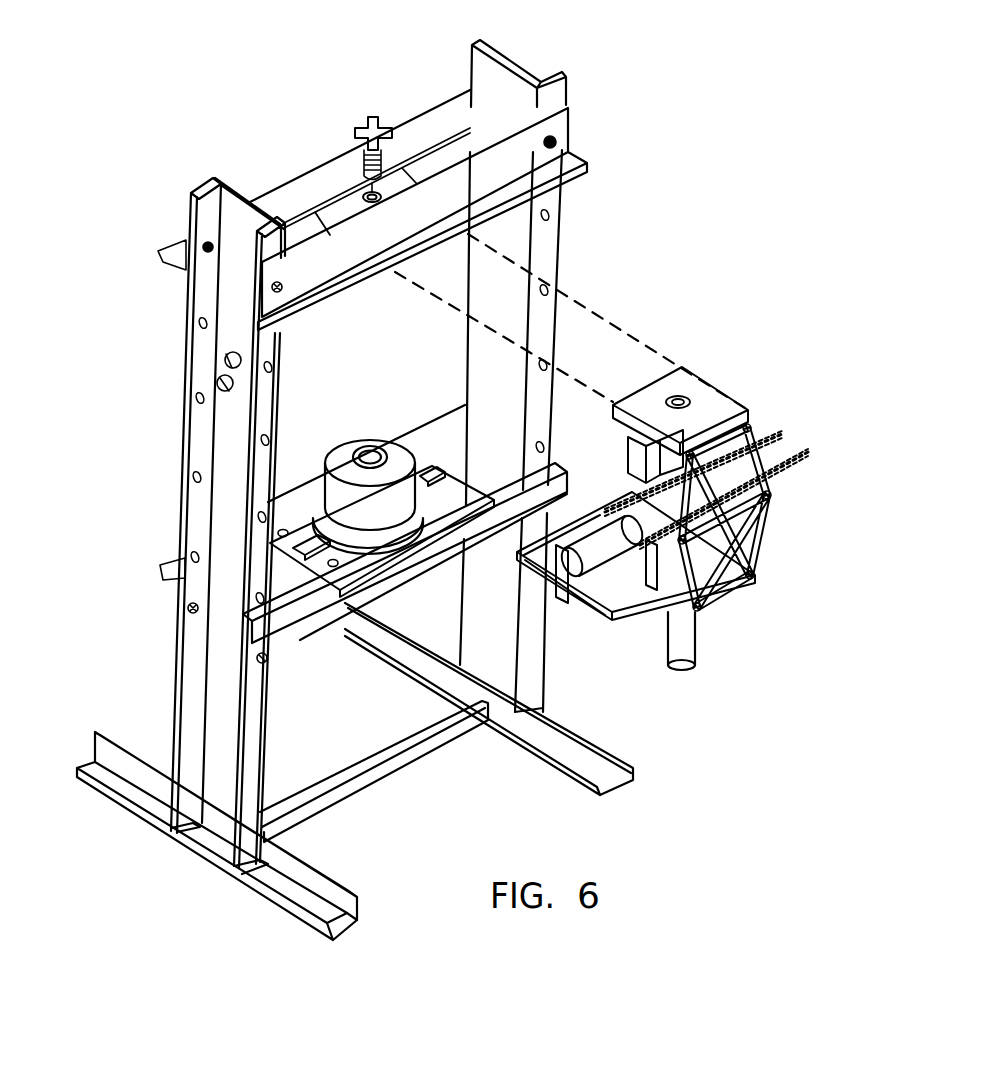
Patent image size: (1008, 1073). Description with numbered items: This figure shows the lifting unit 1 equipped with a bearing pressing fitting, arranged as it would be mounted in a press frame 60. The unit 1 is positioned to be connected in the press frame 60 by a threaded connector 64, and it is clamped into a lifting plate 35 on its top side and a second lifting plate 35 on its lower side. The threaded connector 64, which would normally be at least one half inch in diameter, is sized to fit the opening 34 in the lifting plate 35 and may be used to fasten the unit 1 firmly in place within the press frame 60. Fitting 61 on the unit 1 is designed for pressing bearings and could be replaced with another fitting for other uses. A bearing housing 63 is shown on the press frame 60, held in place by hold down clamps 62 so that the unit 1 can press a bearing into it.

The unit 1 is at (798, 431).
The opening 34 is at (682, 398).
The lifting plate 35 is at (710, 405).
The press frame 60 is at (228, 477).
The fitting 61 is at (690, 643).
The hold down clamps 62 is at (436, 469).
The bearing housing 63 is at (388, 500).
The threaded connector 64 is at (356, 152).